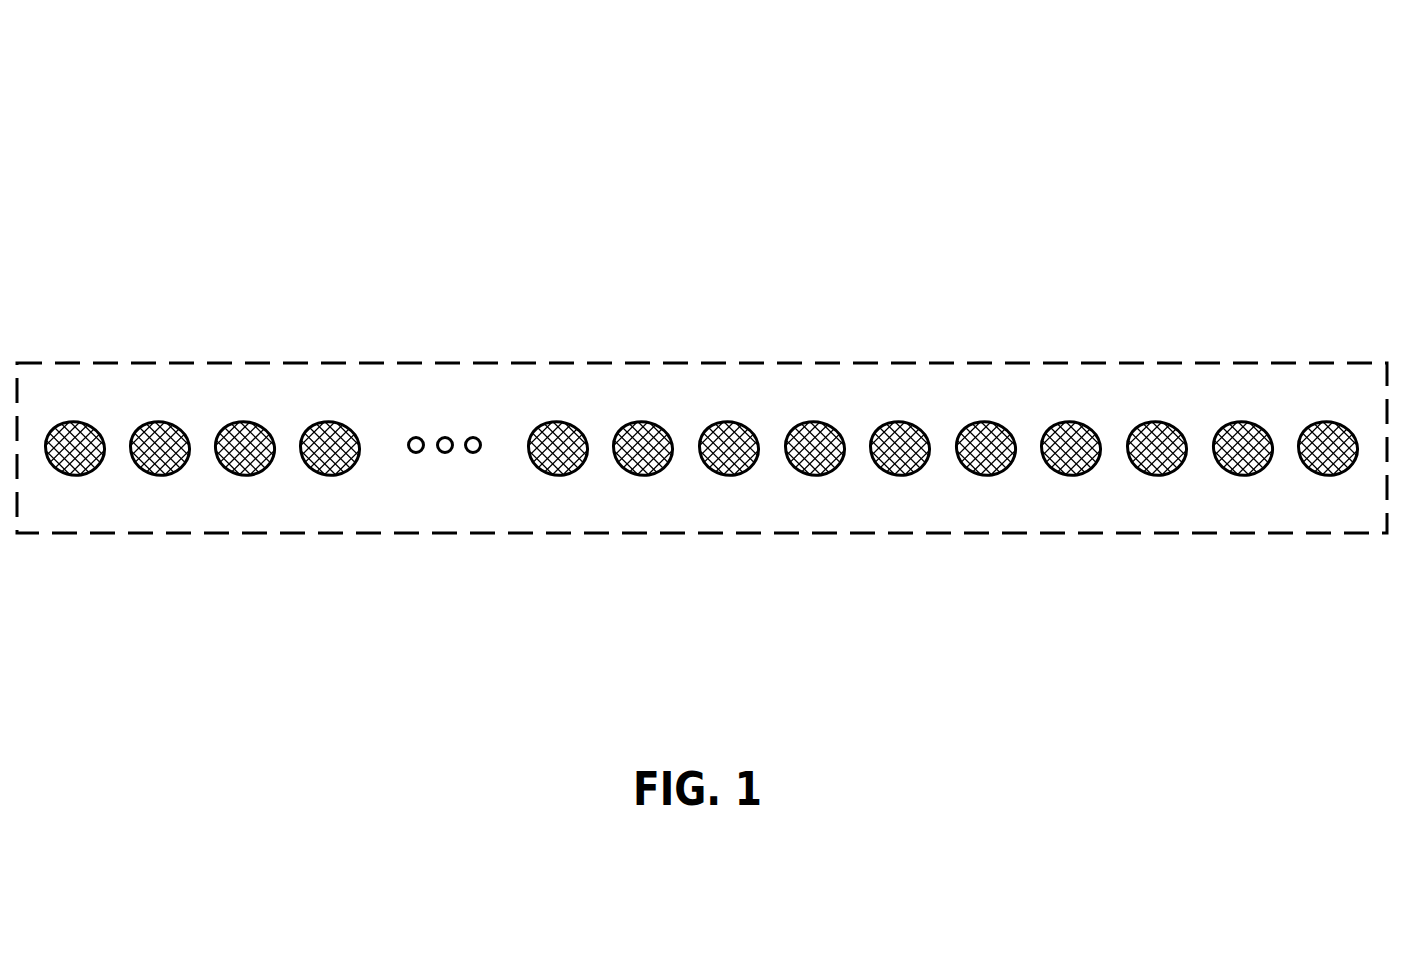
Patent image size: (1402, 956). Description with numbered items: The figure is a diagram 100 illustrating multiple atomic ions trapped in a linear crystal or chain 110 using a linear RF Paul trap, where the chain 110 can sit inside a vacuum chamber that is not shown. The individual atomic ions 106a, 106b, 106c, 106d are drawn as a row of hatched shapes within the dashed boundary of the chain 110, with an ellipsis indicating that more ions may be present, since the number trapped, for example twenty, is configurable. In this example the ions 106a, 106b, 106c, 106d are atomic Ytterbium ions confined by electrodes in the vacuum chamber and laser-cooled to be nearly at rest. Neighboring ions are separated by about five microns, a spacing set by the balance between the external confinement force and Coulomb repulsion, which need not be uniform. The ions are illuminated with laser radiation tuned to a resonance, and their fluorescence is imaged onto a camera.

The diagram 100 is at (188, 120).
The linear crystal or chain 110 is at (762, 360).
The atomic ion 106a is at (100, 430).
The atomic ion 106b is at (182, 430).
The atomic ion 106c is at (1263, 428).
The atomic ion 106d is at (1348, 428).